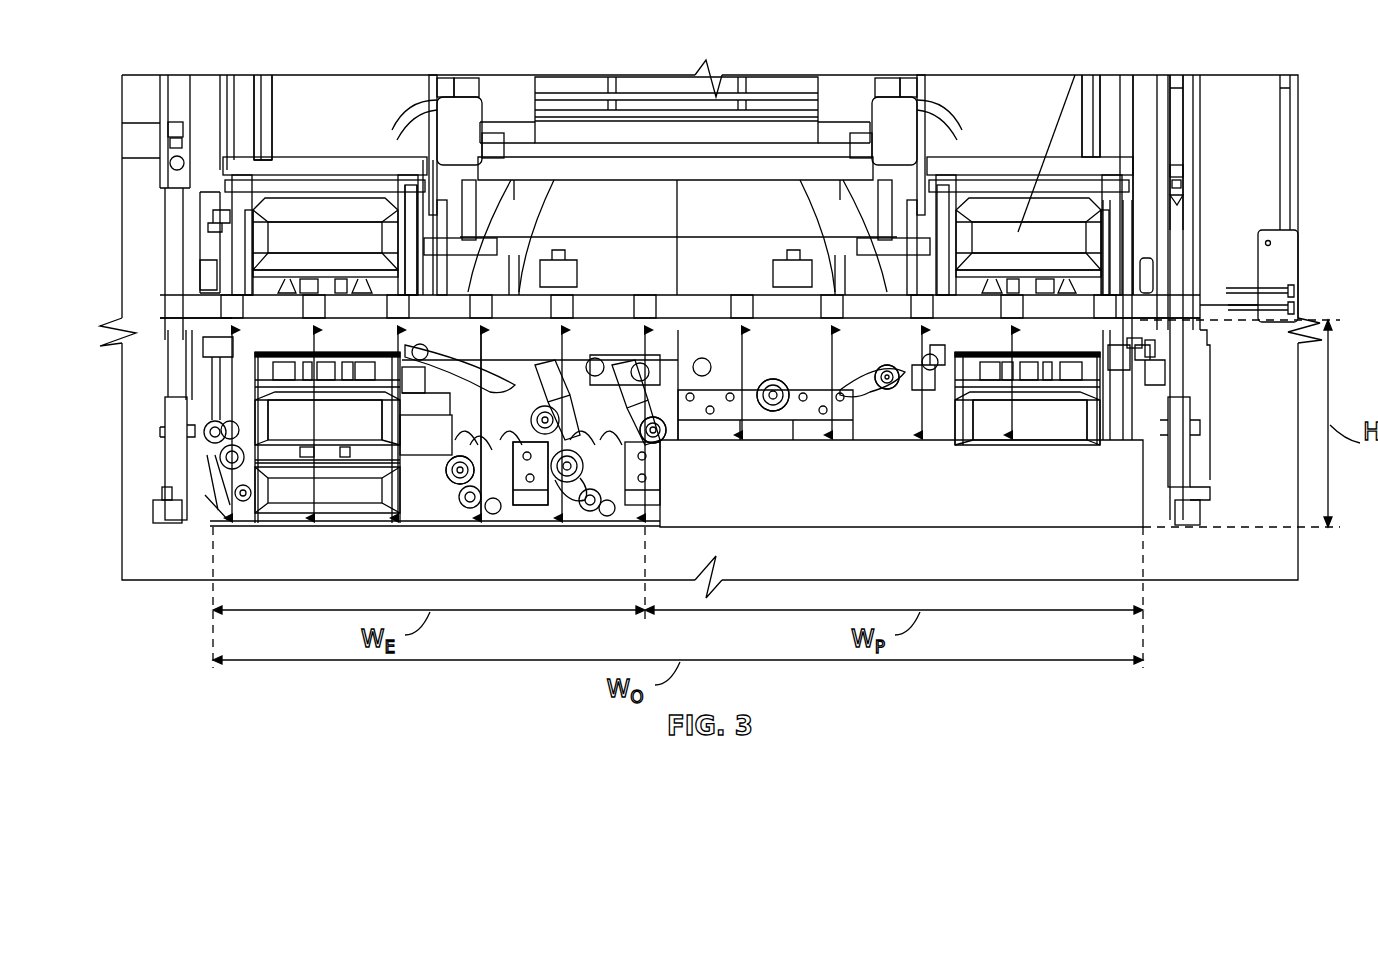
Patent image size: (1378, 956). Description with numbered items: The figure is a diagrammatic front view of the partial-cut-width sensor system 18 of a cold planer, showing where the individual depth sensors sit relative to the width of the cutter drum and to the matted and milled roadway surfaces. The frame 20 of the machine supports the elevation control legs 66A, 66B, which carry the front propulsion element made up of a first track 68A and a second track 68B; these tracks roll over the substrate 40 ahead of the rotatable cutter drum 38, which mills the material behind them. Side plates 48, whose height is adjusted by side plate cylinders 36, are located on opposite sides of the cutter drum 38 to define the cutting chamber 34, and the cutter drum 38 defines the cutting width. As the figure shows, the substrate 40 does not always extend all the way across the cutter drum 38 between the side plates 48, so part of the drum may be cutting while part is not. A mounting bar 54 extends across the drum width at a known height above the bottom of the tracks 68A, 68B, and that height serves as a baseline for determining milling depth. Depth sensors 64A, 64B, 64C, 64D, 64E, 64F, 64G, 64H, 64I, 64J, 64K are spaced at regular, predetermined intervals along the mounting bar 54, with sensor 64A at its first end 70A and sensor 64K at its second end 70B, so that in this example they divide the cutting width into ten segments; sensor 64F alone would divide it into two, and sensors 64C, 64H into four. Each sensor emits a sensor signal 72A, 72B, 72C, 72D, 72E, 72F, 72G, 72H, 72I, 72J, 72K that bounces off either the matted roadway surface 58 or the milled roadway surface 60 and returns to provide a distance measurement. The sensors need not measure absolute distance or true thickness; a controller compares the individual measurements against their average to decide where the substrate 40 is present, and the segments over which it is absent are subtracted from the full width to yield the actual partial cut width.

The partial-cut-width sensor system 18 is at (1112, 278).
The frame 20 is at (1130, 120).
The cutting chamber 34 is at (503, 537).
The side plate cylinders 36 is at (168, 97).
The rotatable cutter drum 38 is at (568, 472).
The substrate 40 is at (1013, 488).
The side plate 48 is at (177, 457).
The mounting bar 54 is at (530, 305).
The matted roadway surface 58 is at (697, 450).
The milled roadway surface 60 is at (435, 528).
The depth sensor 64A is at (1117, 300).
The depth sensor 64B is at (1012, 295).
The depth sensor 64C is at (922, 295).
The depth sensor 64D is at (832, 295).
The depth sensor 64E is at (742, 293).
The depth sensor 64F is at (648, 293).
The depth sensor 64G is at (563, 295).
The depth sensor 64H is at (478, 295).
The depth sensor 64I is at (390, 297).
The depth sensor 64J is at (313, 297).
The depth sensor 64K is at (225, 310).
The elevation control leg 66A is at (320, 100).
The elevation control leg 66B is at (1048, 95).
The first track 68A is at (353, 240).
The second track 68B is at (1047, 237).
The first end 70A is at (1132, 305).
The second end 70B is at (227, 318).
The sensor signal 72A is at (1097, 417).
The sensor signal 72B is at (1008, 408).
The sensor signal 72C is at (910, 390).
The sensor signal 72D is at (827, 375).
The sensor signal 72E is at (718, 382).
The sensor signal 72F is at (642, 508).
The sensor signal 72G is at (518, 410).
The sensor signal 72H is at (455, 463).
The sensor signal 72I is at (390, 417).
The sensor signal 72J is at (310, 413).
The sensor signal 72K is at (212, 527).